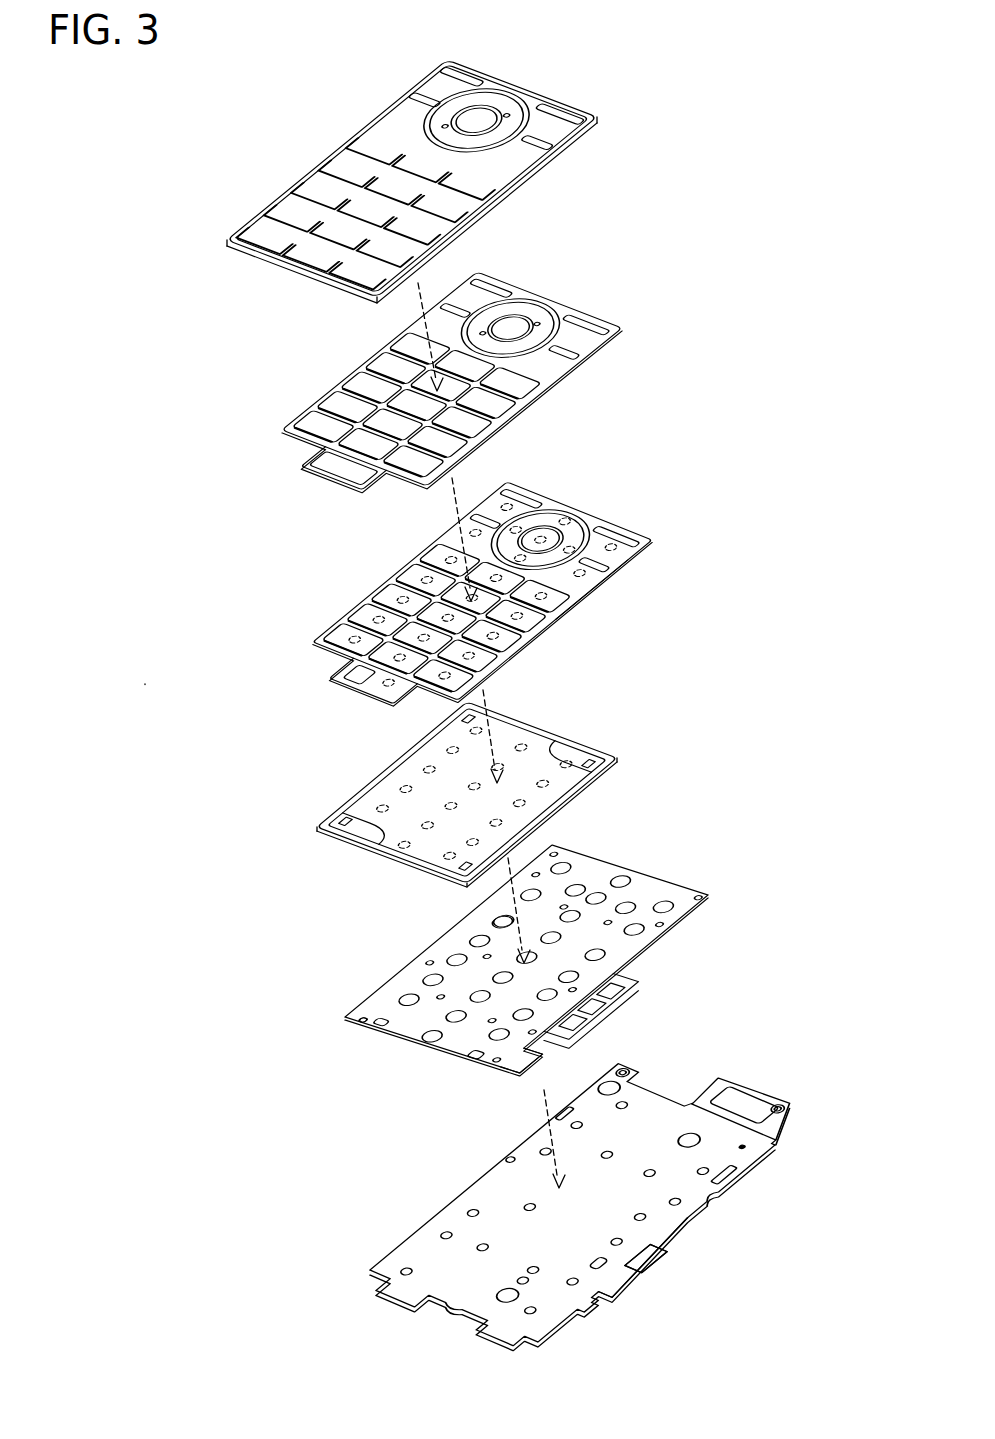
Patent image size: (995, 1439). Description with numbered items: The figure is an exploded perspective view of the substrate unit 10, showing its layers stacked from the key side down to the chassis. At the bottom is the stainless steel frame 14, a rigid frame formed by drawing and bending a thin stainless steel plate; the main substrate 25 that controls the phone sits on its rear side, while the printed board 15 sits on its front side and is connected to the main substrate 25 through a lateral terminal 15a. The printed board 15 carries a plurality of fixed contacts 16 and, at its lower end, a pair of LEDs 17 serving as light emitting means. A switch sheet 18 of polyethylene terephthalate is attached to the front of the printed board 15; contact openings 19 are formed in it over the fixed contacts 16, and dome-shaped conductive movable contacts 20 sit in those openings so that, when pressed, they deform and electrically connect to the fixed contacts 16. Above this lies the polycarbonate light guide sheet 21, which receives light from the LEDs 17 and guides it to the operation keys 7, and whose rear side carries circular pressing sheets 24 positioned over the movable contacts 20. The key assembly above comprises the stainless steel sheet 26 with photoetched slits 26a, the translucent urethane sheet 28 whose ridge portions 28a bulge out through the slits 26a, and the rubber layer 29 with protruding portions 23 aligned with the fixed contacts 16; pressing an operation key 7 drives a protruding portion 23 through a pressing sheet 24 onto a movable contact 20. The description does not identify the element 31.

The substrate unit 10 is at (140, 694).
The stainless steel sheet 26 is at (412, 162).
The slits 26a is at (362, 158).
The operation keys 7 is at (287, 220).
The urethane sheet 28 is at (440, 377).
The ridge portions 28a is at (388, 374).
The rubber layer 29 is at (490, 587).
The dome switch frame 31 is at (407, 578).
The protruding portions 23 is at (577, 607).
The pressing sheets 24 is at (539, 784).
The light guide sheet 21 is at (482, 779).
The conductive movable contacts 20 is at (455, 955).
The fixed contacts 16 is at (589, 898).
The printed board 15 is at (512, 957).
The lateral terminal 15a is at (533, 1063).
The contact openings 19 is at (430, 977).
The switch sheet 18 is at (383, 1003).
The LEDs 17 is at (473, 1057).
The stainless steel frame 14 is at (591, 1197).
The main substrate 25 is at (643, 1270).